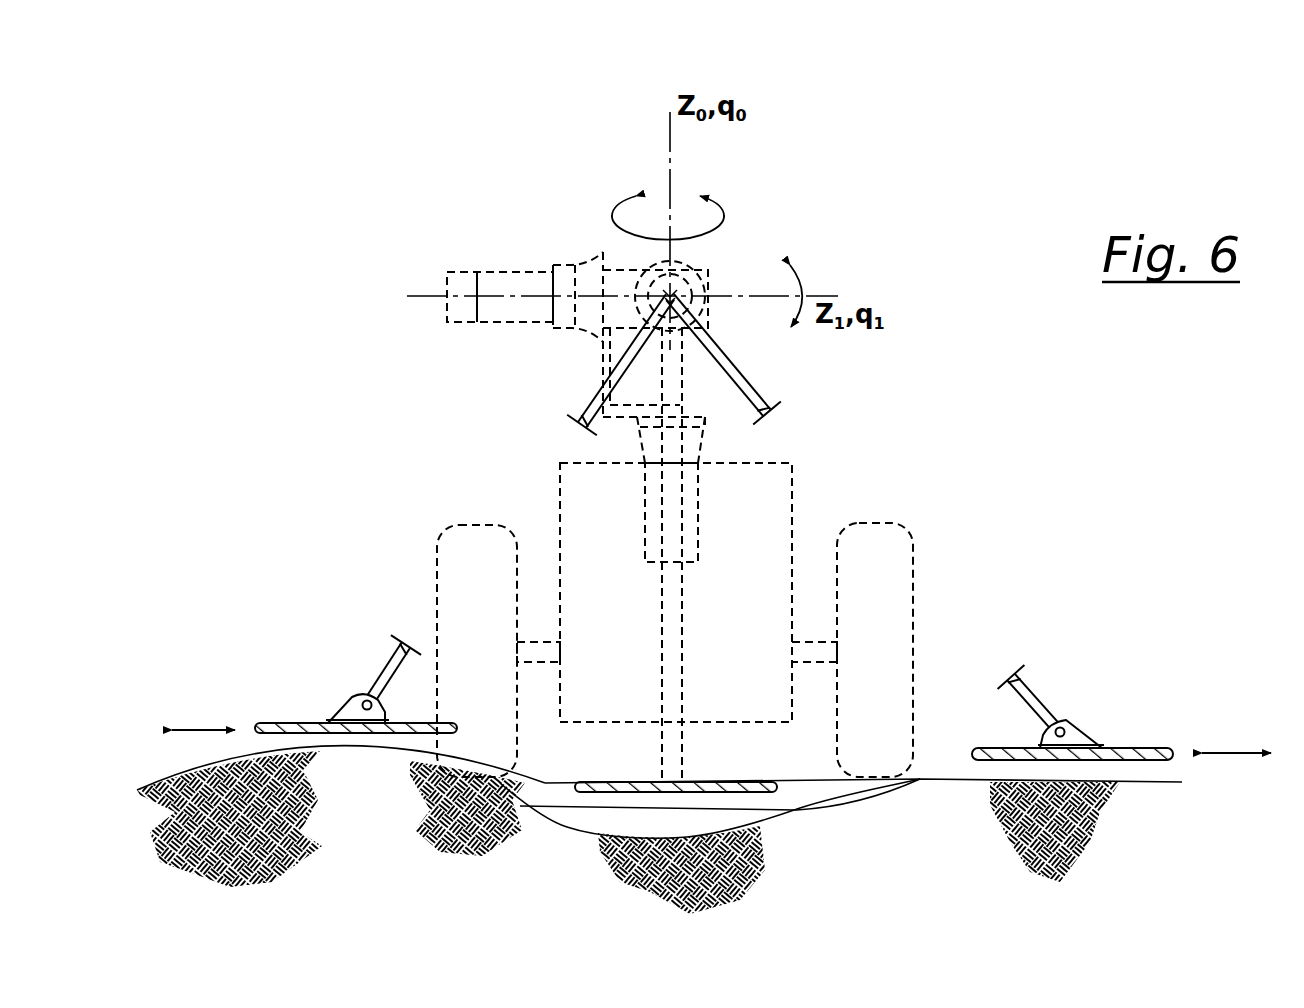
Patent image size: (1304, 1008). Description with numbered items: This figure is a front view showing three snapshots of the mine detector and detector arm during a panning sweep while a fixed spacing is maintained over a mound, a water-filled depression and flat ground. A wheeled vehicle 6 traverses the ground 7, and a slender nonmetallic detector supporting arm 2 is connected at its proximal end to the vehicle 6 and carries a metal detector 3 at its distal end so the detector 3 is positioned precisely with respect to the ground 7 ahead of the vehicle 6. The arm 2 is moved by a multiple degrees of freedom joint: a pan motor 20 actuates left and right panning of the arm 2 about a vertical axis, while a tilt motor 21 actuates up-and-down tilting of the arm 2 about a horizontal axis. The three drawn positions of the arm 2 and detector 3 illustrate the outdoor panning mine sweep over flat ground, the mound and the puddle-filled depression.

The detector supporting arm 2 is at (623, 362).
The metal detector 3 is at (297, 720).
The wheeled vehicle 6 is at (767, 520).
The ground 7 is at (340, 816).
The pan motor 20 is at (688, 500).
The tilt motor 21 is at (517, 288).